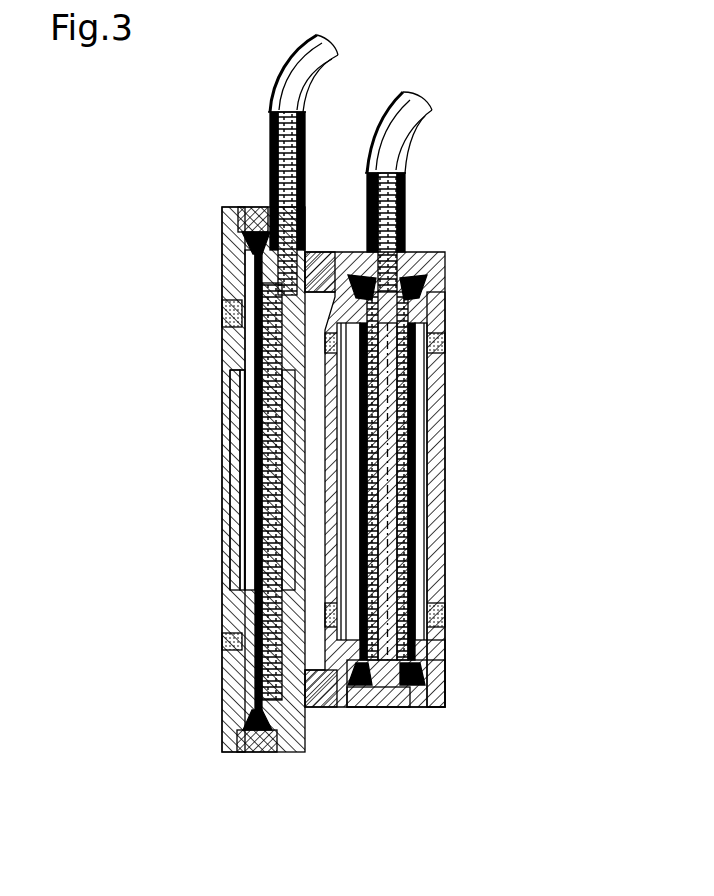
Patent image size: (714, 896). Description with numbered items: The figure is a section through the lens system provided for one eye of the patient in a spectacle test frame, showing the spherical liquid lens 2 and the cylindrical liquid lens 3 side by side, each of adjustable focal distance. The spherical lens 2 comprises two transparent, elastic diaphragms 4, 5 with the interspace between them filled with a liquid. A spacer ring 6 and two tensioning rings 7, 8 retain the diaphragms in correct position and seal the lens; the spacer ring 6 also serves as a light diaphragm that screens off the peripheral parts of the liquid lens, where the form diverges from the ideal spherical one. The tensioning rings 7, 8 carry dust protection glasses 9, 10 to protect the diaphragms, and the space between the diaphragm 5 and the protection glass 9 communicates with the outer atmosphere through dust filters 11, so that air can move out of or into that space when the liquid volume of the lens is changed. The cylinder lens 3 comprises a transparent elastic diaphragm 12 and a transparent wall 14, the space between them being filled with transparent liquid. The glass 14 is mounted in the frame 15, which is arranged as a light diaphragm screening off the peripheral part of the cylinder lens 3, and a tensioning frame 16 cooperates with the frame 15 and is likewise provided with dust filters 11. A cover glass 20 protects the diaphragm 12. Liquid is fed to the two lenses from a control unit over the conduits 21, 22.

The spherical liquid lens 2 is at (497, 270).
The cylindrical liquid lens 3 is at (168, 271).
The transparent elastic diaphragm 4 is at (388, 440).
The transparent elastic diaphragm 5 is at (397, 480).
The spacer ring 6 is at (405, 702).
The tensioning ring 7 is at (445, 665).
The tensioning ring 8 is at (345, 708).
The dust protection glass 9 is at (440, 492).
The dust protection glass 10 is at (335, 515).
The dust filters 11 is at (228, 642).
The transparent elastic diaphragm 12 is at (265, 500).
The transparent wall 14 is at (270, 558).
The frame 15 is at (282, 745).
The tensioning frame 16 is at (232, 705).
The cover glass 20 is at (228, 455).
The conduit 21 is at (412, 142).
The conduit 22 is at (308, 90).